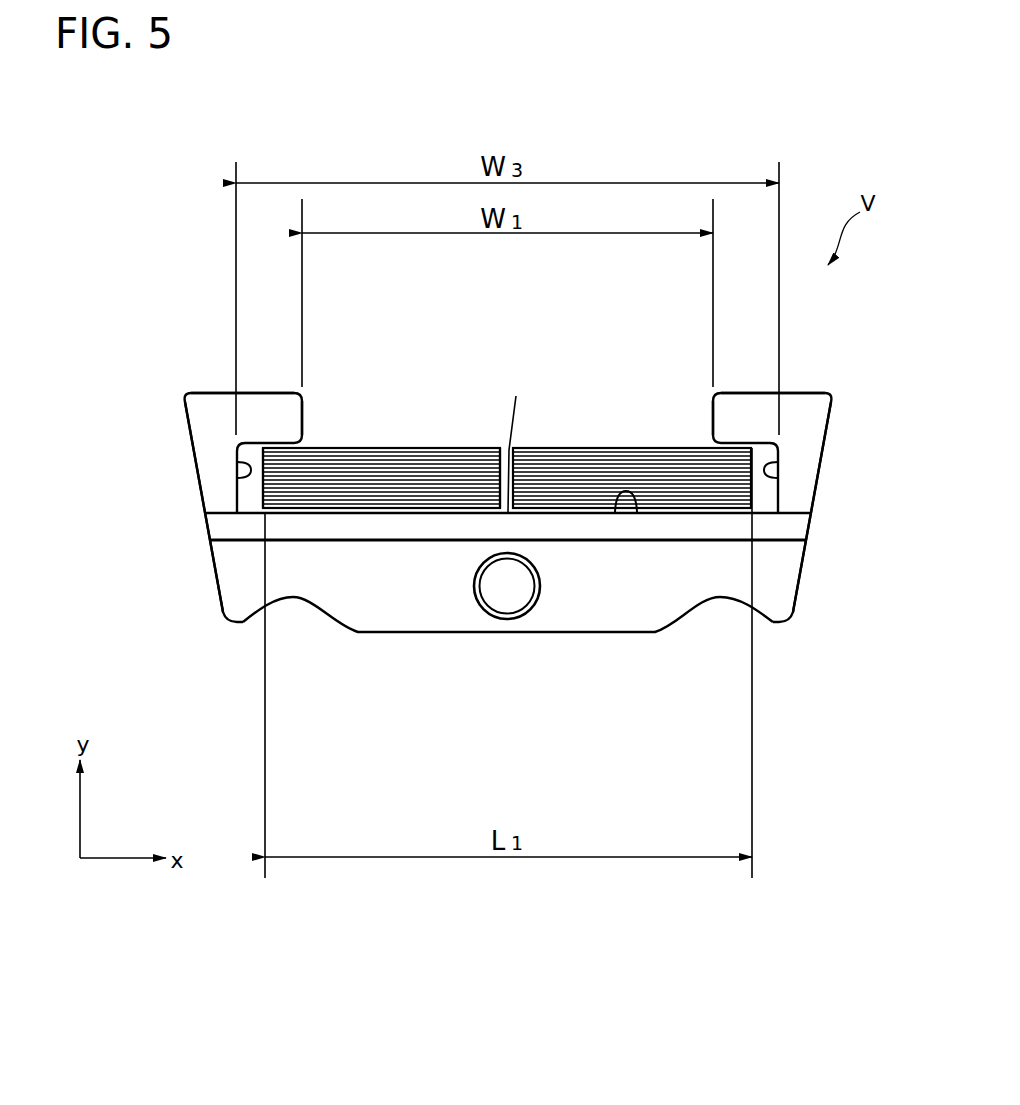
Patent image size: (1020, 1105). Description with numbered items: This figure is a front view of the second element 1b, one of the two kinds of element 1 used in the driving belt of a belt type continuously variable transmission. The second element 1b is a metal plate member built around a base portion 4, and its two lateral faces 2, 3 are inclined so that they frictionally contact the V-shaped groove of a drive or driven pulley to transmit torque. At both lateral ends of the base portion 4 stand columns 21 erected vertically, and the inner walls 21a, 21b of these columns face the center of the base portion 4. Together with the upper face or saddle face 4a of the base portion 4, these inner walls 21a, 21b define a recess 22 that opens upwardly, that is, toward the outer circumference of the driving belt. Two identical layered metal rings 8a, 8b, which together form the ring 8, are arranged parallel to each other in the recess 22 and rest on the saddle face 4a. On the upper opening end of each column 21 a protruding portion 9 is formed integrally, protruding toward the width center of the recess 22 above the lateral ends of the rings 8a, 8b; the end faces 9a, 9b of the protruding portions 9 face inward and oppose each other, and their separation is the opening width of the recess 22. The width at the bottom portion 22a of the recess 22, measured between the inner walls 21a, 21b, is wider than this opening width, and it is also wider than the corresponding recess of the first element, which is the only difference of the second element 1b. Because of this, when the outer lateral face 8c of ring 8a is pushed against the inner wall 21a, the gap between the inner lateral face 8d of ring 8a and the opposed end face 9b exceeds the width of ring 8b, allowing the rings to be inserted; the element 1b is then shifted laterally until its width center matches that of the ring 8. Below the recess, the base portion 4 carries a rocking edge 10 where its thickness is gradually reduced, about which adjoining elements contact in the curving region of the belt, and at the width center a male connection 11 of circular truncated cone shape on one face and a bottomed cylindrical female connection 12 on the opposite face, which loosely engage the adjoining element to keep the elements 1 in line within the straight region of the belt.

The element 1 is at (506, 585).
The second element 1b is at (506, 585).
The lateral face 2 is at (802, 580).
The lateral face 3 is at (213, 570).
The base portion 4 is at (663, 590).
The saddle face 4a is at (615, 512).
The ring 8 is at (429, 457).
The ring 8a is at (380, 468).
The ring 8b is at (640, 449).
The outer lateral face 8c is at (263, 497).
The inner lateral face 8d is at (502, 452).
The protruding portion 9 is at (270, 423).
The end face 9a is at (303, 424).
The end face 9b is at (712, 412).
The rocking edge 10 is at (417, 542).
The male connection 11 is at (518, 646).
The female connection 12 is at (508, 594).
The column 21 is at (218, 437).
The inner wall 21a is at (249, 478).
The inner wall 21b is at (764, 478).
The recess 22 is at (474, 389).
The bottom portion 22a is at (517, 441).